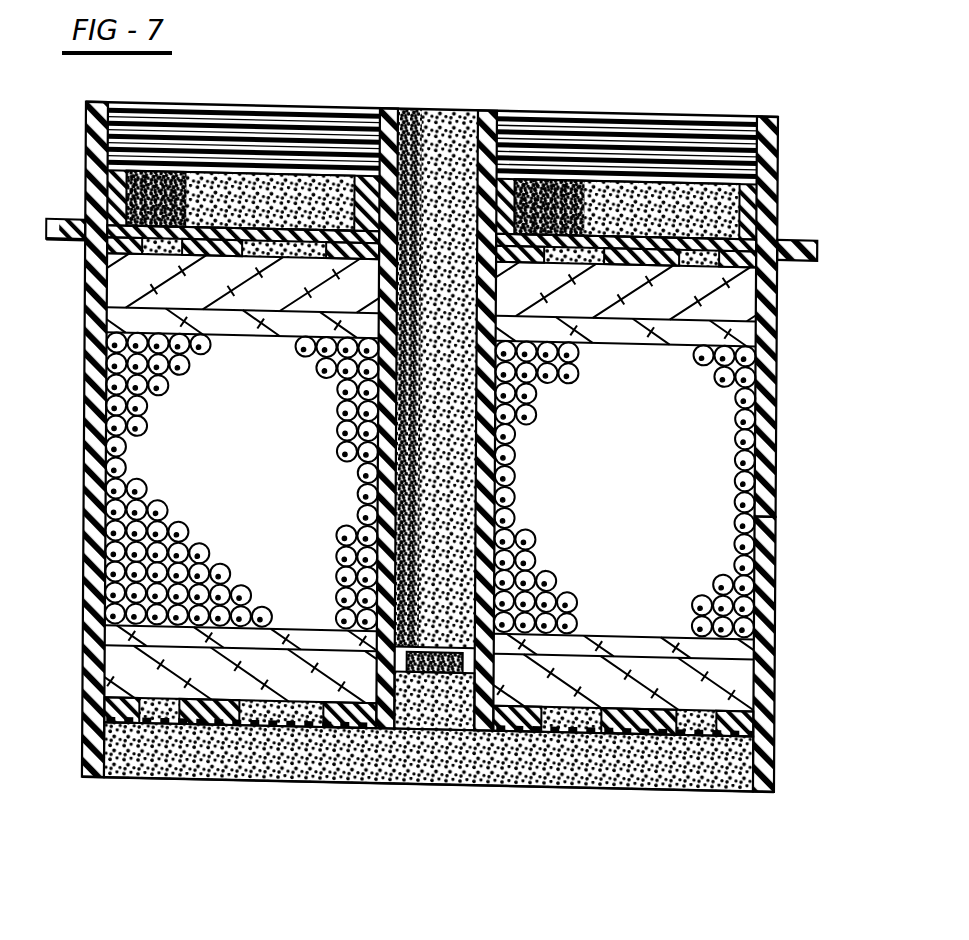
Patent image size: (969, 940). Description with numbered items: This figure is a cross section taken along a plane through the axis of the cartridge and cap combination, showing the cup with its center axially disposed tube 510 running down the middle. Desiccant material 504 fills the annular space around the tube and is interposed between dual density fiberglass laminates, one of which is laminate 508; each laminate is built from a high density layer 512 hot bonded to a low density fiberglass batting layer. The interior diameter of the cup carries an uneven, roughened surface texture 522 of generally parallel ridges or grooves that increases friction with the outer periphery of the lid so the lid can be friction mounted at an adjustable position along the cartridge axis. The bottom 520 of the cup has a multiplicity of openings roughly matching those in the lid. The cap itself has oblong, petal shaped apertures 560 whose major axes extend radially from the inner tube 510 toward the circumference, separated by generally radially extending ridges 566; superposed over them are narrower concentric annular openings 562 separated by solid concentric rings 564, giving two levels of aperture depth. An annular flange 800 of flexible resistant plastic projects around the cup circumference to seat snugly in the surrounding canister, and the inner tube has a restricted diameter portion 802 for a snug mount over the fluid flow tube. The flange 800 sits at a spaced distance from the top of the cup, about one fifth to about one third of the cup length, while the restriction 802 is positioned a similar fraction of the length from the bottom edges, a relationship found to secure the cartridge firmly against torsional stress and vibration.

The desiccant material 504 is at (770, 437).
The dual density fiberglass laminate 508 is at (770, 668).
The center axially disposed tube 510 is at (456, 130).
The high density layer 512 is at (123, 313).
The bottom of the cup 520 is at (125, 765).
The roughened surface texture 522 is at (320, 112).
The petal shaped apertures 560 is at (260, 710).
The concentric annular openings 562 is at (660, 258).
The concentric rings 564 is at (695, 300).
The radially extending ridges 566 is at (195, 228).
The annular flange 800 is at (805, 241).
The restricted diameter portion 802 is at (405, 652).